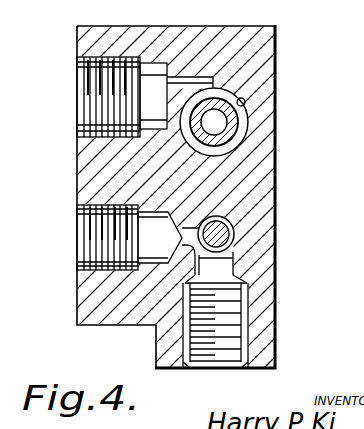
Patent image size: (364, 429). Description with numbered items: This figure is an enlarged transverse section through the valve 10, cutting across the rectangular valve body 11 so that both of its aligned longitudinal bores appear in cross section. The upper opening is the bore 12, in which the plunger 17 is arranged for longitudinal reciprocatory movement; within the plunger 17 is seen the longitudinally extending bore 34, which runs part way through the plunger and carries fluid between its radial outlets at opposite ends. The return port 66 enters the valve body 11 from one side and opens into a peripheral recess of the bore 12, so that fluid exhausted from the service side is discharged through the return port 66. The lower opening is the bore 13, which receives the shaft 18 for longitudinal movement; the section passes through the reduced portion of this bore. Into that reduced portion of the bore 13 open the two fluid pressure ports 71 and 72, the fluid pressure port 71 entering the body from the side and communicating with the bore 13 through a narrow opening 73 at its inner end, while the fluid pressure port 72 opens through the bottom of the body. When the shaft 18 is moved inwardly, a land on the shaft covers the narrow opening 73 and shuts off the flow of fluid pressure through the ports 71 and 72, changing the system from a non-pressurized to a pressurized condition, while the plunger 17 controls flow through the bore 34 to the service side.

The valve 10 is at (278, 35).
The valve body 11 is at (205, 38).
The bore 12 is at (245, 100).
The bore 13 is at (228, 225).
The plunger 17 is at (220, 132).
The shaft 18 is at (230, 242).
The longitudinally extending bore 34 is at (228, 136).
The return port 66 is at (92, 100).
The fluid pressure port 71 is at (93, 251).
The fluid pressure port 72 is at (233, 318).
The narrow opening 73 is at (187, 253).